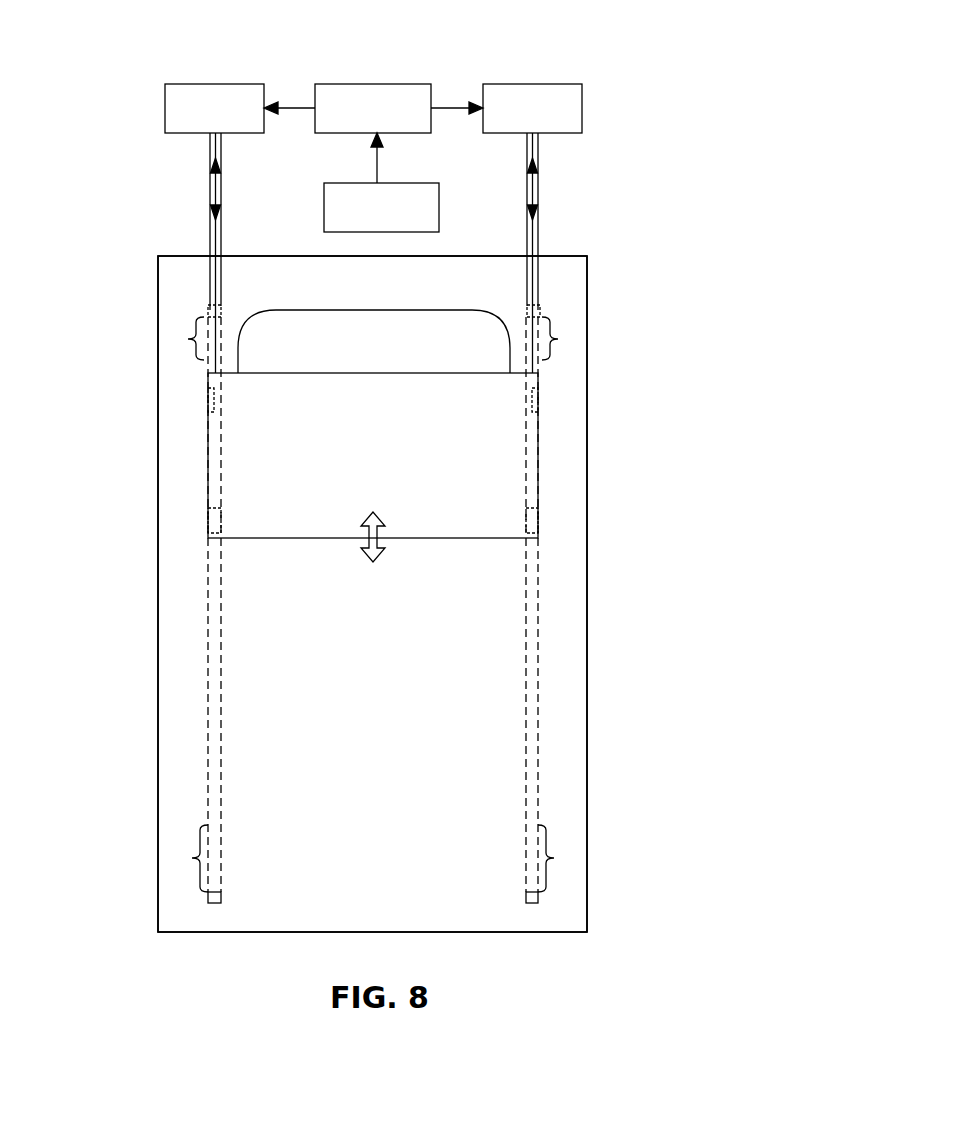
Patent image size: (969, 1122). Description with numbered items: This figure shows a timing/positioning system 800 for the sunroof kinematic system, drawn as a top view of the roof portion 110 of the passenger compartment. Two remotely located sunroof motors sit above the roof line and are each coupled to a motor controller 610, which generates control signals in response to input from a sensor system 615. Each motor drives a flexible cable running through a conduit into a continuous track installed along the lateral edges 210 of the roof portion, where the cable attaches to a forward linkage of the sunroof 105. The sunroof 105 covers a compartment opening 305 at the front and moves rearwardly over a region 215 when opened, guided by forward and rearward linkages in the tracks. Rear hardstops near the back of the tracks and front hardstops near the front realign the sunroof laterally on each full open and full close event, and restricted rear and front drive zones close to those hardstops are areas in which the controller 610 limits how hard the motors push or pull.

The timing/positioning system 800 is at (707, 35).
The roof portion 110 is at (177, 295).
The motor controller 610 is at (375, 83).
The sensor system 615 is at (402, 182).
The compartment opening 305 is at (374, 326).
The sunroof 105 is at (373, 455).
The region 215 is at (374, 555).
The lateral edges 210 is at (166, 643).